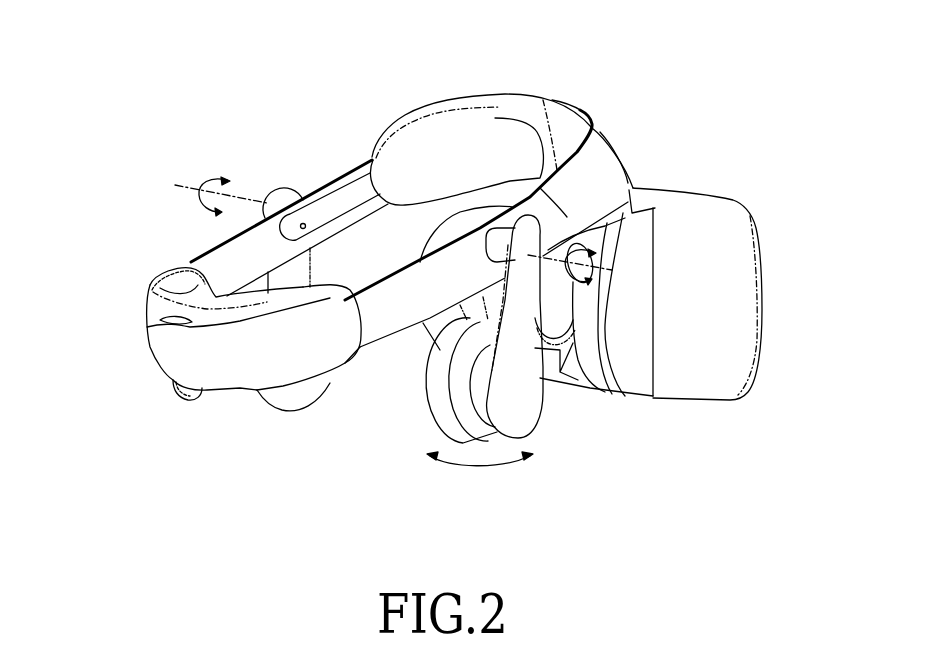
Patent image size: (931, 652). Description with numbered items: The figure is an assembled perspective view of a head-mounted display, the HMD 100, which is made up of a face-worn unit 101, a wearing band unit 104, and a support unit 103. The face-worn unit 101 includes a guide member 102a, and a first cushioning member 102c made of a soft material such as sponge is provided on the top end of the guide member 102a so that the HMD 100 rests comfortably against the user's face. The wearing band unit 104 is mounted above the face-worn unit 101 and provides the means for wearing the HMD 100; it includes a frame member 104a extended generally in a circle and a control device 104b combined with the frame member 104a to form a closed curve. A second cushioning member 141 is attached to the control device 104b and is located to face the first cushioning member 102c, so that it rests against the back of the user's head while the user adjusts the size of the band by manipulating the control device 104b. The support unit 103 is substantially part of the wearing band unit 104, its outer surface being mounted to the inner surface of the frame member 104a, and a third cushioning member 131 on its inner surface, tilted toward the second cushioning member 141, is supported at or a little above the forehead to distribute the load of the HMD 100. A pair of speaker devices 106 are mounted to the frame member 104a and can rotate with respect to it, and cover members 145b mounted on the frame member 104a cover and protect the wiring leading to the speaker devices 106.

The HMD 100 is at (146, 108).
The face-worn unit 101 is at (742, 208).
The guide member 102a is at (630, 337).
The first cushioning member 102c is at (595, 347).
The support unit 103 is at (519, 90).
The wearing band unit 104 is at (396, 494).
The frame member 104a is at (380, 317).
The control device 104b is at (232, 373).
The speaker device 106 is at (538, 420).
The third cushioning member 131 is at (422, 137).
The second cushioning member 141 is at (158, 286).
The cover member 145b is at (327, 203).